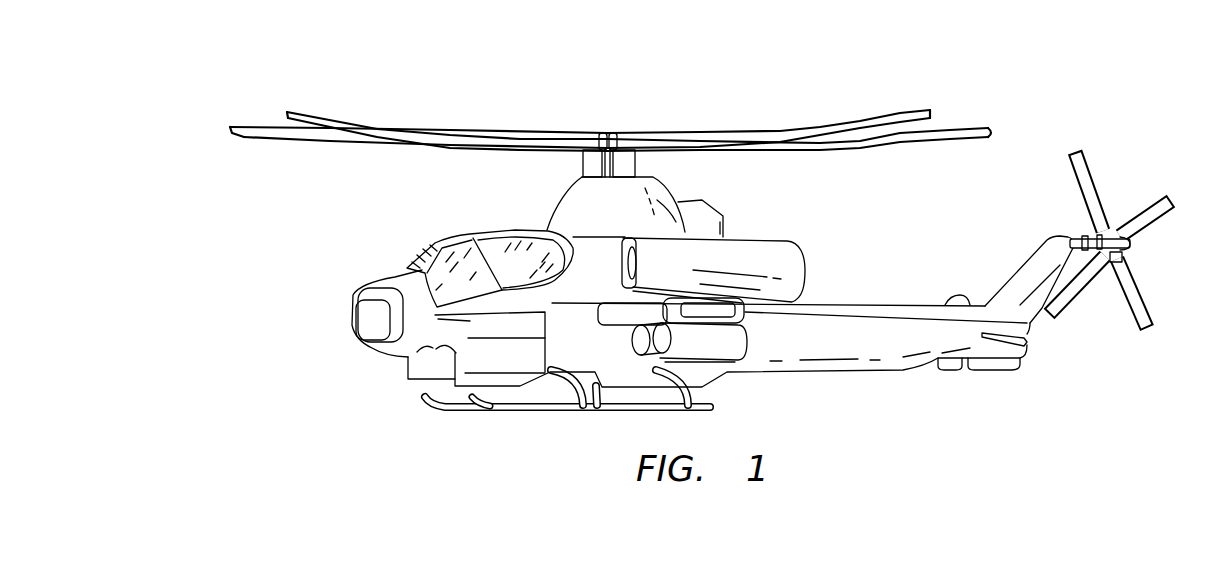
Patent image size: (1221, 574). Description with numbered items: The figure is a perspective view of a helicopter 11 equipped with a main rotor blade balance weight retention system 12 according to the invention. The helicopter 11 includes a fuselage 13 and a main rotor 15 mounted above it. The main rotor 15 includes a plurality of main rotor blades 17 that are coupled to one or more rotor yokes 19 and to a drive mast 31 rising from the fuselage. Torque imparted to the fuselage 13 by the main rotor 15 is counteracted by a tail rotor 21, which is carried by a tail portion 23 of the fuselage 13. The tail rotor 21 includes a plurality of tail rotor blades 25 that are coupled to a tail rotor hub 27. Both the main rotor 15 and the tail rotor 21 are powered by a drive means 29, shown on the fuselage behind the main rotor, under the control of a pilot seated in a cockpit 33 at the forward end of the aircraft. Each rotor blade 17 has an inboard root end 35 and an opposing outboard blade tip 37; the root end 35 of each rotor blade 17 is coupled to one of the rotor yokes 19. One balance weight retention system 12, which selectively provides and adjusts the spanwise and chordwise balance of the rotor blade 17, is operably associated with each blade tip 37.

The helicopter 11 is at (712, 86).
The main rotor blade balance weight retention system 12 is at (260, 121).
The fuselage 13 is at (726, 376).
The main rotor 15 is at (490, 126).
The main rotor blade 17 is at (281, 145).
The rotor yoke 19 is at (606, 132).
The tail rotor 21 is at (1103, 291).
The tail portion 23 is at (1018, 273).
The tail rotor blade 25 is at (1090, 165).
The tail rotor hub 27 is at (1120, 229).
The drive means 29 is at (766, 238).
The drive mast 31 is at (583, 166).
The cockpit 33 is at (430, 242).
The inboard root end 35 is at (601, 132).
The outboard blade tip 37 is at (229, 128).